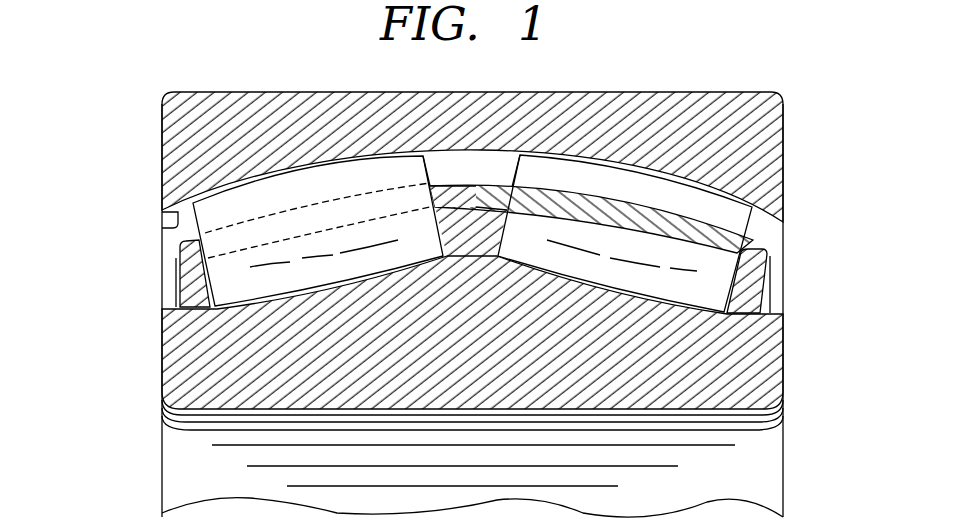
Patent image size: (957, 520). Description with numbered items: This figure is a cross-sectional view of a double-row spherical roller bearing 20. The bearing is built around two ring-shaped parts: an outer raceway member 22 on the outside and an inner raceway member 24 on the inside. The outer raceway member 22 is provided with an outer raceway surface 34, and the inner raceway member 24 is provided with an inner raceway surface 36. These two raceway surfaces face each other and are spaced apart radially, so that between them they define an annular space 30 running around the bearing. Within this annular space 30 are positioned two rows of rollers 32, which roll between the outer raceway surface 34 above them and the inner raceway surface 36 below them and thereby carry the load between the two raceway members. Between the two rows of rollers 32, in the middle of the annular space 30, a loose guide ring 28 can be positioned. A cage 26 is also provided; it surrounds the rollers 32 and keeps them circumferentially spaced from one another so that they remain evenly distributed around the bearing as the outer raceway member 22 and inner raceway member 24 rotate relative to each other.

The double-row spherical roller bearing 20 is at (661, 80).
The outer raceway member 22 is at (317, 113).
The inner raceway member 24 is at (197, 393).
The cage 26 is at (178, 253).
The loose guide ring 28 is at (485, 217).
The annular space 30 is at (463, 158).
The rollers 32 is at (213, 205).
The outer raceway surface 34 is at (163, 232).
The inner raceway surface 36 is at (768, 263).